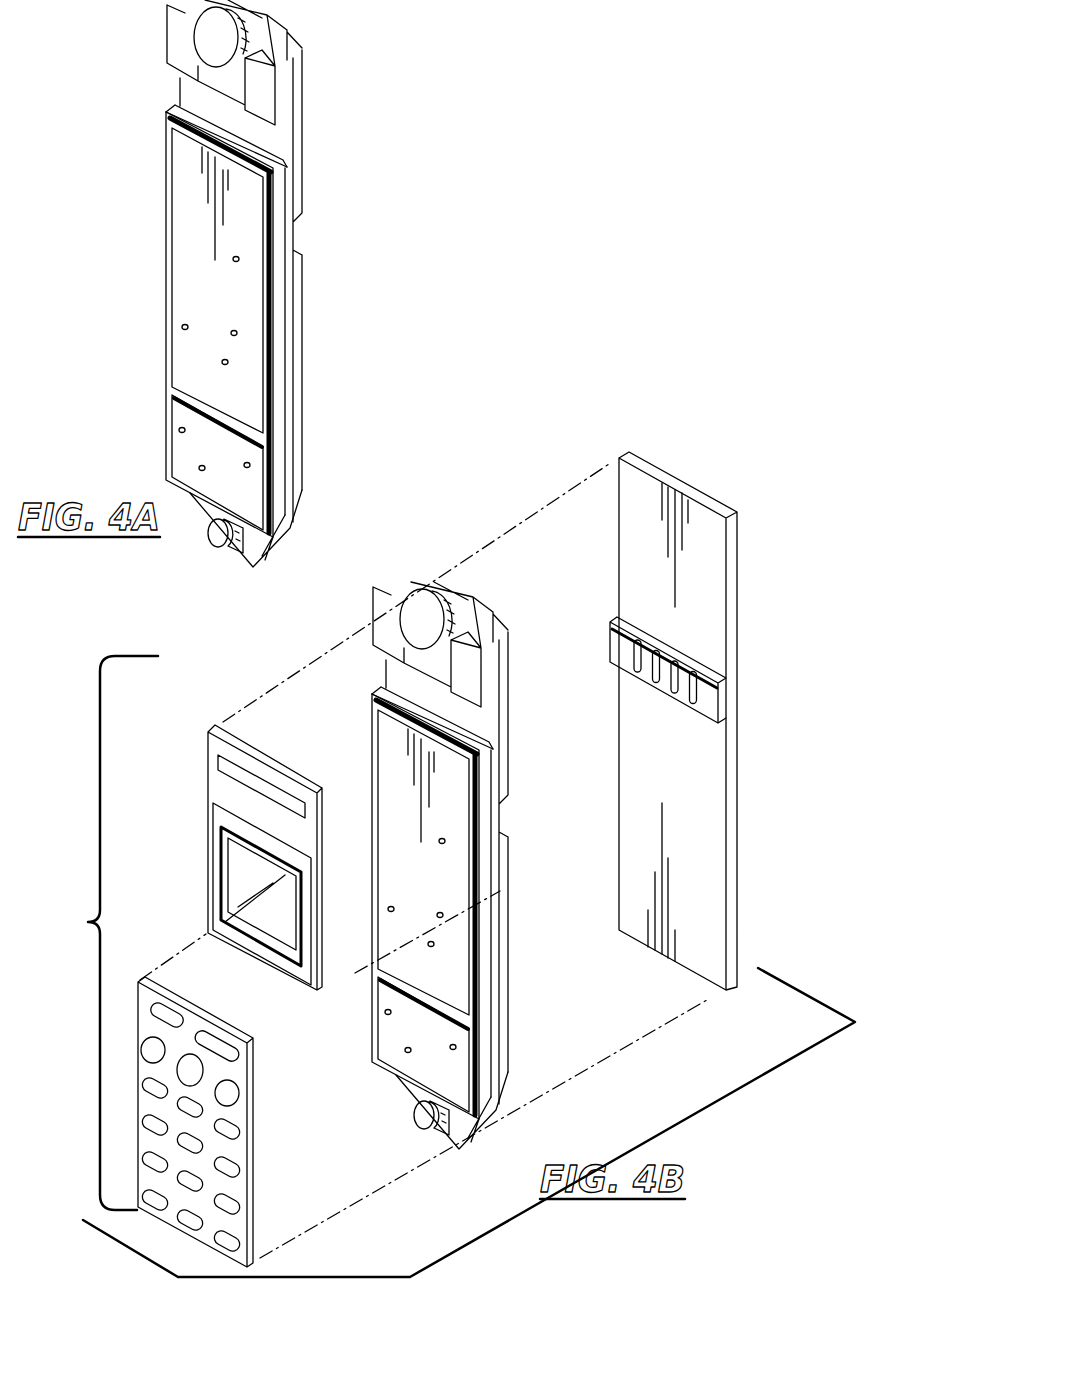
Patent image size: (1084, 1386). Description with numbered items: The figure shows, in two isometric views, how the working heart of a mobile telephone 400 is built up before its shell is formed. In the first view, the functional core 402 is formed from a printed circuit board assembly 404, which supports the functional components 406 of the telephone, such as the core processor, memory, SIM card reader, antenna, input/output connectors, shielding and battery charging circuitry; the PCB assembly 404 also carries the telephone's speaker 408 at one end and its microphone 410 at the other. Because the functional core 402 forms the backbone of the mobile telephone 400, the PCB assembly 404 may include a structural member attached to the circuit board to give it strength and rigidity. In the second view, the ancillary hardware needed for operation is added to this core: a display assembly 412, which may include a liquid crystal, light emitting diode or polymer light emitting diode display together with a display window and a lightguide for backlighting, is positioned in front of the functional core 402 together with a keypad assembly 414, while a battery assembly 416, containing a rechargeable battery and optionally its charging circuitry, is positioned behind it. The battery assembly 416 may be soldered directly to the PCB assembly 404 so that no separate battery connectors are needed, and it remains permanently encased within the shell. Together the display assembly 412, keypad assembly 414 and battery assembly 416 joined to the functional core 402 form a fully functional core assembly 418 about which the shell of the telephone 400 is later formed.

In FIG. 4A, the mobile telephone 400 is at (257, 297).
In FIG. 4B, the mobile telephone 400 is at (434, 863).
In FIG. 4A, the functional core 402 is at (234, 297).
In FIG. 4B, the functional core 402 is at (447, 593).
In FIG. 4A, the printed circuit board (PCB) assembly 404 is at (282, 378).
In FIG. 4A, the functional components 406 is at (187, 448).
In FIG. 4A, the speaker 408 is at (208, 32).
In FIG. 4A, the microphone 410 is at (217, 540).
In FIG. 4B, the display assembly 412 is at (238, 868).
In FIG. 4B, the keypad assembly 414 is at (228, 1115).
In FIG. 4B, the battery assembly 416 is at (728, 573).
In FIG. 4B, the fully functional core assembly 418 is at (86, 922).